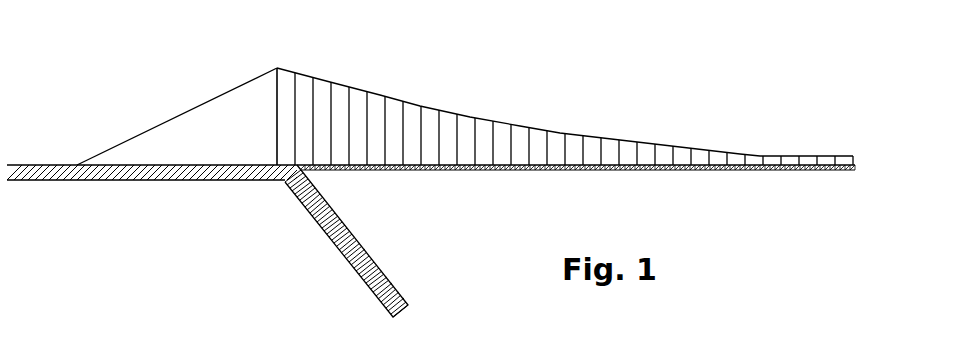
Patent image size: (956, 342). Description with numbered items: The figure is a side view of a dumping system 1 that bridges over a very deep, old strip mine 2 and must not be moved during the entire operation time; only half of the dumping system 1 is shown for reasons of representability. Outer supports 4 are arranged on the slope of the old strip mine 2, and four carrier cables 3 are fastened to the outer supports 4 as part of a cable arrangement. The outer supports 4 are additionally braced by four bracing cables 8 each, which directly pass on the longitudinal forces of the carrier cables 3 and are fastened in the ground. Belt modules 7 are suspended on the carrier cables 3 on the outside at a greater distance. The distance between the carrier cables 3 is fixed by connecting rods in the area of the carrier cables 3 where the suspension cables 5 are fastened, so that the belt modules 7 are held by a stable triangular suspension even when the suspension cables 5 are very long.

The dumping system 1 is at (568, 98).
The old strip mine 2 is at (403, 207).
The carrier cables 3 is at (746, 150).
The outer supports 4 is at (275, 122).
The suspension cables 5 is at (456, 144).
The belt modules 7 is at (493, 165).
The bracing cables 8 is at (136, 137).